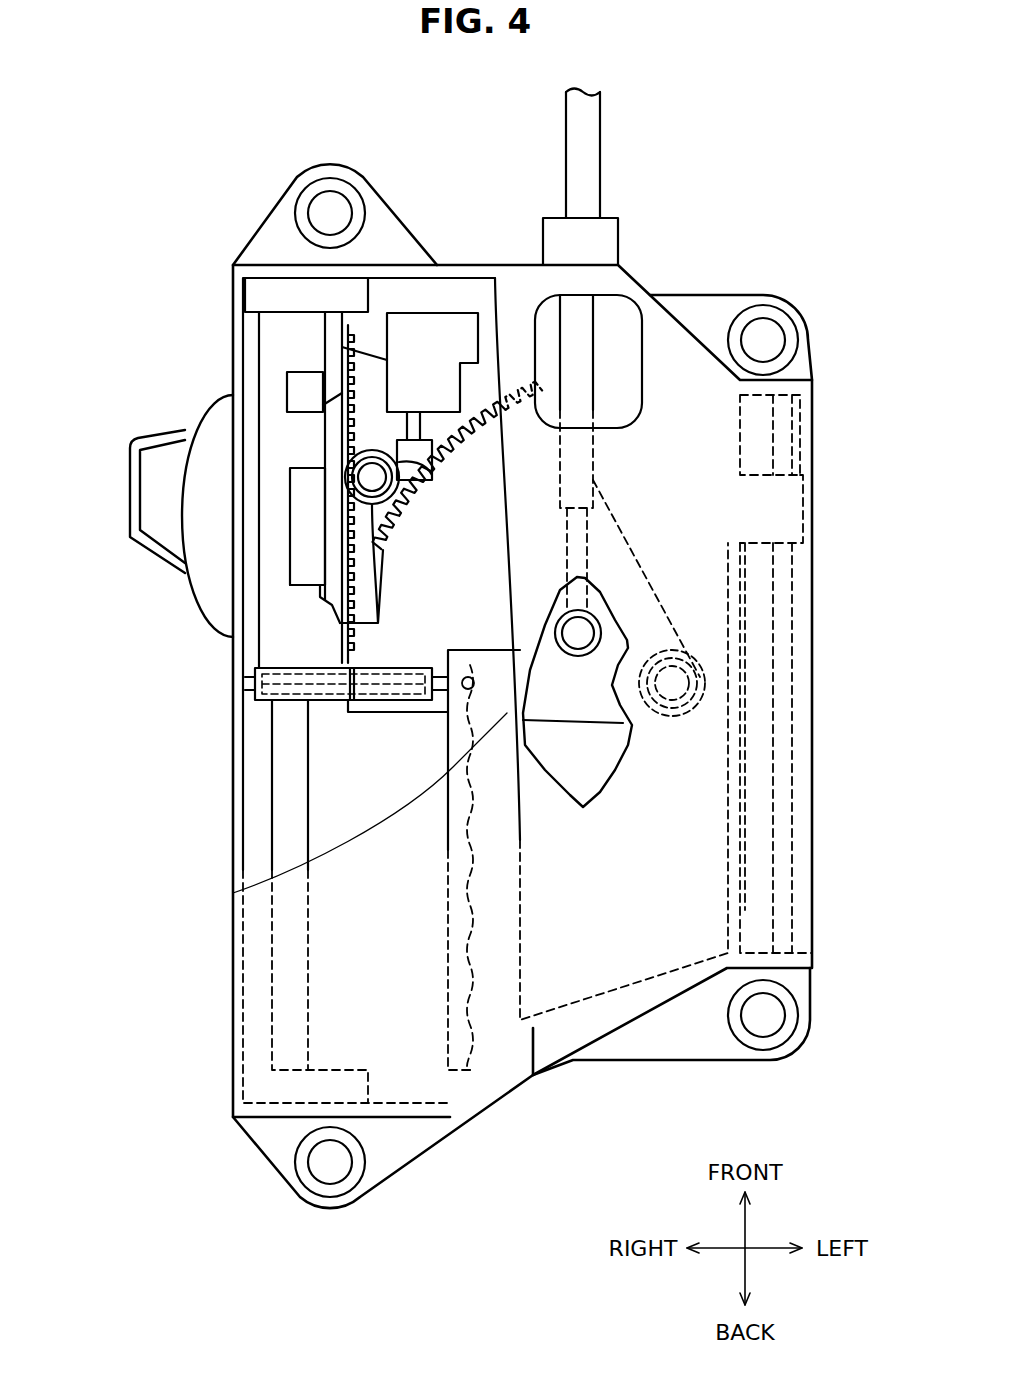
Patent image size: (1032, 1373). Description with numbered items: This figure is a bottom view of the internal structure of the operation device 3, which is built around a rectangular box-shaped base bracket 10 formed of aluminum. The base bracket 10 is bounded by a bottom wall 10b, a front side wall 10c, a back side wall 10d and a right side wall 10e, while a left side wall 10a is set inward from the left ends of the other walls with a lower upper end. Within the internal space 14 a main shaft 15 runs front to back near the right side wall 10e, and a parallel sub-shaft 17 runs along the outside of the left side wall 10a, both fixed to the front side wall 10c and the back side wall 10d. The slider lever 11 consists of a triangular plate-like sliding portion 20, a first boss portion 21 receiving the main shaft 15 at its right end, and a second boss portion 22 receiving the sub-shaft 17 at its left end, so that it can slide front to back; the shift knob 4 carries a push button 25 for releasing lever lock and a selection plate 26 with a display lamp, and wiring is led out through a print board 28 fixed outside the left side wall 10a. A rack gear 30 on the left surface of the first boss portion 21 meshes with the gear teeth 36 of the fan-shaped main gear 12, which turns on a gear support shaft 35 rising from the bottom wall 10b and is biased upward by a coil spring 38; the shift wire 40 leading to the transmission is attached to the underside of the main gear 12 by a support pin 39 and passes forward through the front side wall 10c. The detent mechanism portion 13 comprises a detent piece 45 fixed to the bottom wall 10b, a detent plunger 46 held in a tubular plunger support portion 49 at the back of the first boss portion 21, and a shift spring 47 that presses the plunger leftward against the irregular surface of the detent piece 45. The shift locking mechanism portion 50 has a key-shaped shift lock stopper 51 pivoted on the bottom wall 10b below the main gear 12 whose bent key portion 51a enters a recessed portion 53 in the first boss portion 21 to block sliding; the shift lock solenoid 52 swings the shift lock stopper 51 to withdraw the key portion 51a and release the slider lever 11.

The operation device 3 is at (770, 145).
The shift knob 4 is at (230, 393).
The base bracket 10 is at (735, 296).
The left side wall 10a is at (742, 922).
The bottom wall 10b is at (638, 945).
The front side wall 10c is at (510, 262).
The back side wall 10d is at (400, 1118).
The right side wall 10e is at (232, 1085).
The slider lever 11 is at (258, 323).
The main gear 12 is at (627, 560).
The detent mechanism portion 13 is at (327, 700).
The internal space 14 is at (340, 838).
The main shaft 15 is at (272, 1003).
The sub-shaft 17 is at (783, 778).
The sliding portion 20 is at (700, 462).
The first boss portion 21 is at (300, 588).
The second boss portion 22 is at (782, 503).
The push button 25 is at (138, 495).
The selection plate 26 is at (130, 452).
The print board 28 is at (748, 843).
The rack gear 30 is at (363, 347).
The gear support shaft 35 is at (690, 678).
The gear teeth 36 is at (500, 400).
The coil spring 38 is at (625, 720).
The support pin 39 is at (578, 633).
The shift wire 40 is at (604, 122).
The detent piece 45 is at (453, 1090).
The detent plunger 46 is at (385, 706).
The shift spring 47 is at (255, 712).
The plunger support portion 49 is at (300, 700).
The shift locking mechanism portion 50 is at (365, 441).
The shift lock stopper 51 is at (357, 527).
The key portion 51a is at (322, 605).
The shift lock solenoid 52 is at (415, 328).
The recessed portion 53 is at (300, 570).